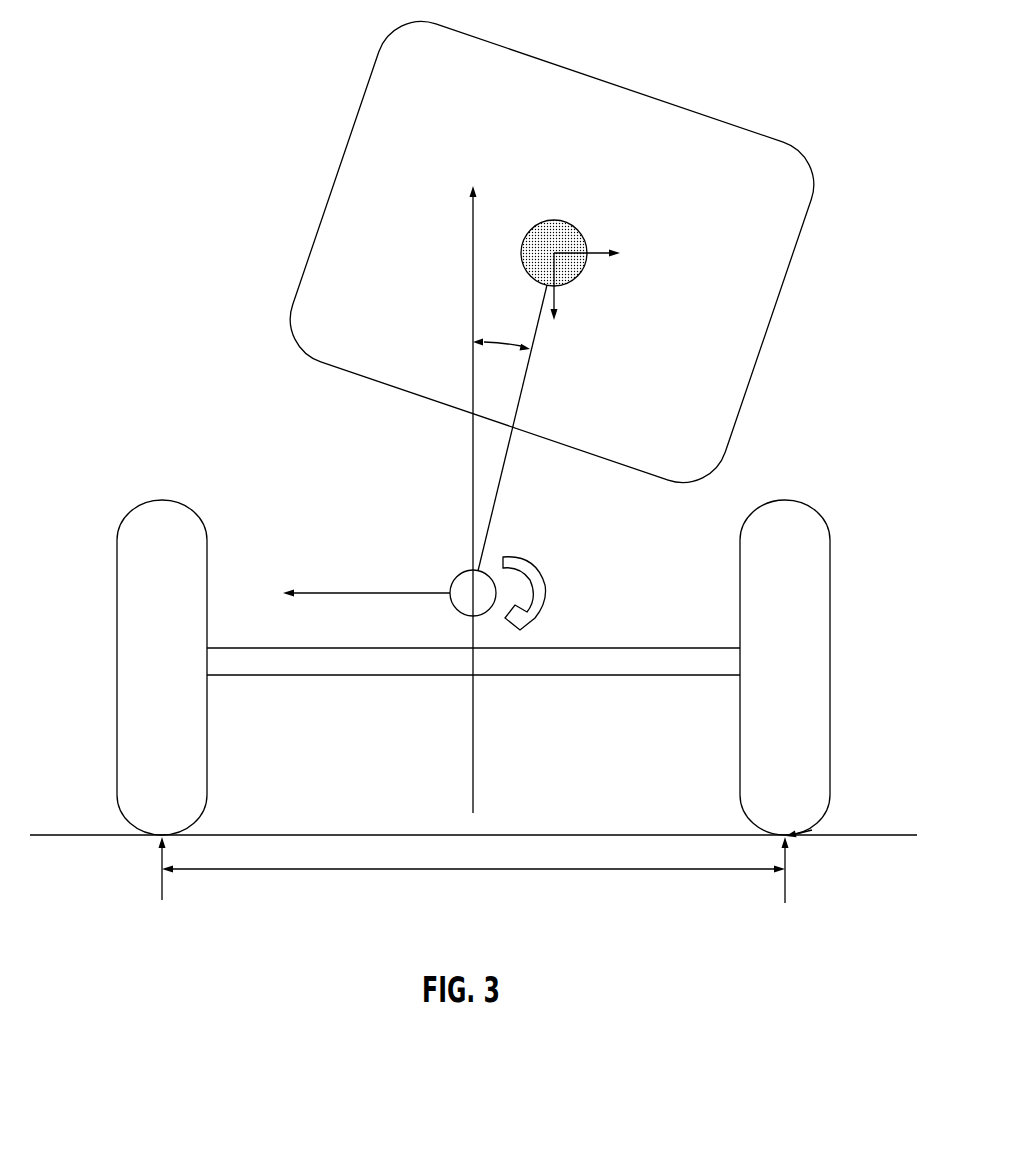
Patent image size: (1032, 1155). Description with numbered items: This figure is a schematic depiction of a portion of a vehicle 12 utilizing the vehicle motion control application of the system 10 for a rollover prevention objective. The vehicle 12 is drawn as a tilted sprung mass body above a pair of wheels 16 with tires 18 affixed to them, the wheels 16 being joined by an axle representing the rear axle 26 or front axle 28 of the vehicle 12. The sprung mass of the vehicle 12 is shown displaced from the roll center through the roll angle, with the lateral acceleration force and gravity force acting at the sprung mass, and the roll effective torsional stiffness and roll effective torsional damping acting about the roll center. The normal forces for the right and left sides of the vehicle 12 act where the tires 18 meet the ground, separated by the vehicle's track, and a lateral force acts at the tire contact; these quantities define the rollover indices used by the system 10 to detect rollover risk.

The system 10 is at (786, 31).
The vehicle 12 is at (791, 342).
The wheels 16 is at (476, 632).
The tires 18 is at (162, 500).
The rear axle 26 is at (473, 697).
The front axle 28 is at (623, 677).